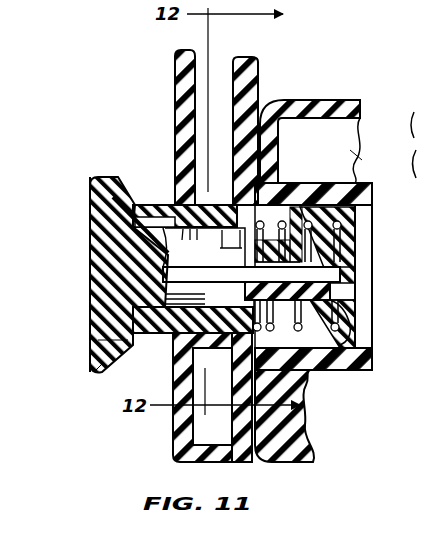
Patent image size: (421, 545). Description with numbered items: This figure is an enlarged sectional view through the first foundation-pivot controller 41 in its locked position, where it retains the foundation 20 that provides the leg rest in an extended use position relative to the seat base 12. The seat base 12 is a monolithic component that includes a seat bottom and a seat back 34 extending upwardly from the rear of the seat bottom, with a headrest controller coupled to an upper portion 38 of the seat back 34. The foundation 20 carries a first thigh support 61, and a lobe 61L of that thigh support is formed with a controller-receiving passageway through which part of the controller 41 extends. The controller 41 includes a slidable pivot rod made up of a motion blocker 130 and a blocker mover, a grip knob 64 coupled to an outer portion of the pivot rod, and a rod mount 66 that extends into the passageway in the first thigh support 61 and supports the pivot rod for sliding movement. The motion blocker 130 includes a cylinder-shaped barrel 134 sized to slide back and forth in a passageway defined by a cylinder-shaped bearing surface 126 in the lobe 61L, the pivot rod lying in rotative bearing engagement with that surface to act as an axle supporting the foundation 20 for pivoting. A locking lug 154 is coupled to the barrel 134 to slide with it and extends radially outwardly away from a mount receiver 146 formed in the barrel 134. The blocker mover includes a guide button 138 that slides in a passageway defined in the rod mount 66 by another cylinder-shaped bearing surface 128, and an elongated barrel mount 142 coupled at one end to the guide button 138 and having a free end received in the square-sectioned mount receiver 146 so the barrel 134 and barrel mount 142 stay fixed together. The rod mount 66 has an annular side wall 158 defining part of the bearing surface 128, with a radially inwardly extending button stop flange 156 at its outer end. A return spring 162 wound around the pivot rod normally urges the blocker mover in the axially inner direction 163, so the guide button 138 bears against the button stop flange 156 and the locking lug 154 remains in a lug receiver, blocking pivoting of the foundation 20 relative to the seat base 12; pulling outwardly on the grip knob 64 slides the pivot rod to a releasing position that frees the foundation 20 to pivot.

The seat base 12 is at (343, 92).
The foundation 20 is at (262, 78).
The seat back 34 is at (360, 158).
The upper portion 38 is at (366, 113).
The first foundation-pivot controller 41 is at (81, 174).
The first thigh support 61 is at (174, 145).
The lobe 61L is at (171, 440).
The grip knob 64 is at (89, 375).
The rod mount 66 is at (306, 376).
The cylinder-shaped bearing surface 126 is at (170, 336).
The cylinder-shaped bearing surface 128 is at (327, 368).
The motion blocker 130 is at (100, 346).
The barrel 134 is at (160, 253).
The guide button 138 is at (365, 237).
The barrel mount 142 is at (230, 284).
The mount receiver 146 is at (326, 250).
The locking lug 154 is at (183, 222).
The button stop flange 156 is at (346, 346).
The annular side wall 158 is at (303, 183).
The return spring 162 is at (352, 300).
The axially inner direction 163 is at (334, 77).